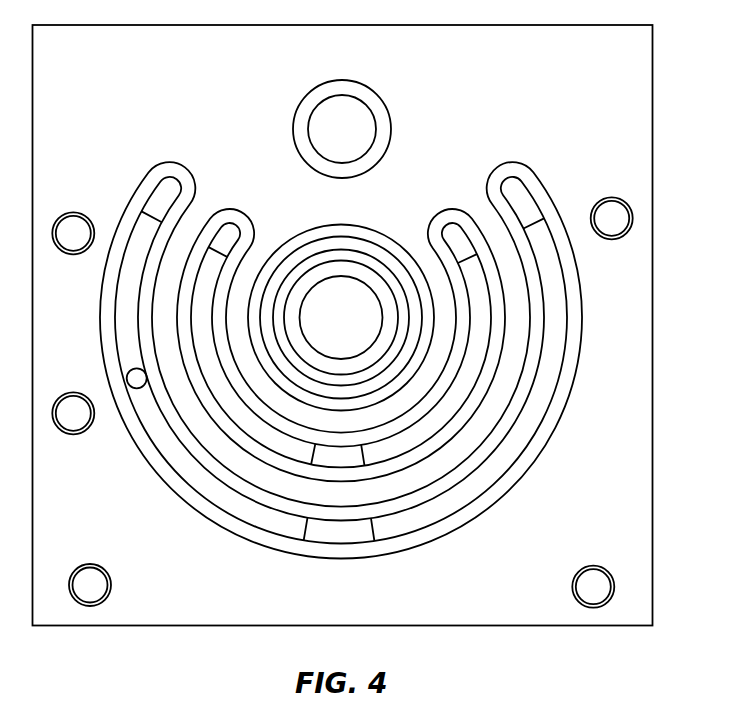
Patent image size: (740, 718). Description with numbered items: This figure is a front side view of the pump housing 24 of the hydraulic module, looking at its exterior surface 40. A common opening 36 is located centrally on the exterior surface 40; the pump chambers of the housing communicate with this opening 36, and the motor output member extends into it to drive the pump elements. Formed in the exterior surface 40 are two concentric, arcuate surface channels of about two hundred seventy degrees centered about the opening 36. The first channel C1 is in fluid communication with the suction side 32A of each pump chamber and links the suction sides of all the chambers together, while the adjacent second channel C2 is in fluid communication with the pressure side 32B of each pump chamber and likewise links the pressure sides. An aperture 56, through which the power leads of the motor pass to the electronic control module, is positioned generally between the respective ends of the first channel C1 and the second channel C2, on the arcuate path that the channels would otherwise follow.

The pump housing 24 is at (652, 161).
The suction side 32A is at (227, 234).
The pressure side 32B is at (171, 188).
The opening 36 is at (345, 276).
The exterior surface 40 is at (607, 522).
The aperture 56 is at (306, 118).
The first channel C1 is at (193, 334).
The second channel C2 is at (130, 252).